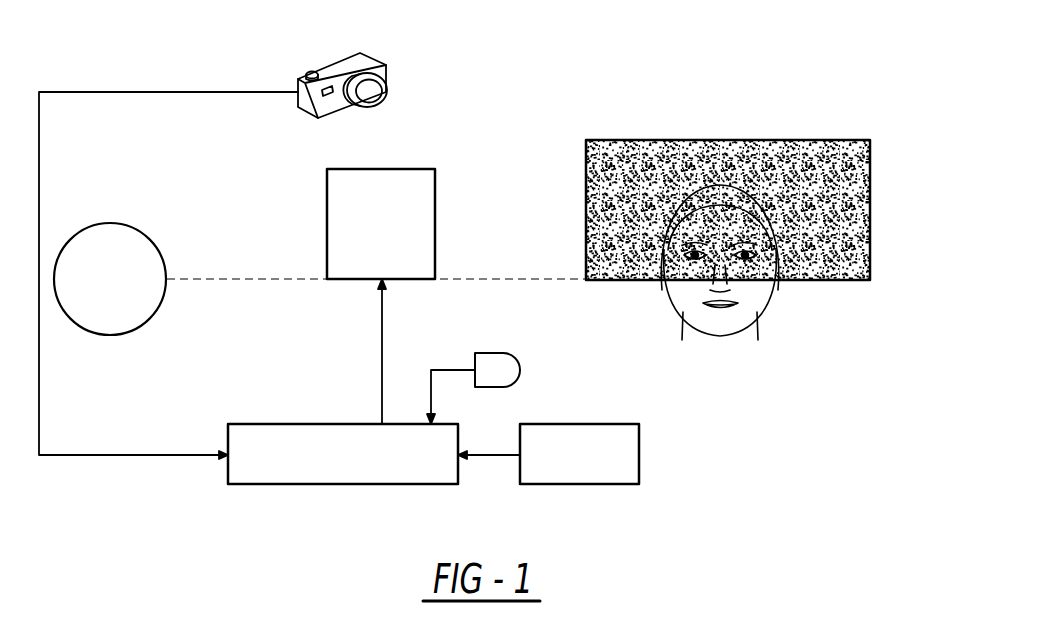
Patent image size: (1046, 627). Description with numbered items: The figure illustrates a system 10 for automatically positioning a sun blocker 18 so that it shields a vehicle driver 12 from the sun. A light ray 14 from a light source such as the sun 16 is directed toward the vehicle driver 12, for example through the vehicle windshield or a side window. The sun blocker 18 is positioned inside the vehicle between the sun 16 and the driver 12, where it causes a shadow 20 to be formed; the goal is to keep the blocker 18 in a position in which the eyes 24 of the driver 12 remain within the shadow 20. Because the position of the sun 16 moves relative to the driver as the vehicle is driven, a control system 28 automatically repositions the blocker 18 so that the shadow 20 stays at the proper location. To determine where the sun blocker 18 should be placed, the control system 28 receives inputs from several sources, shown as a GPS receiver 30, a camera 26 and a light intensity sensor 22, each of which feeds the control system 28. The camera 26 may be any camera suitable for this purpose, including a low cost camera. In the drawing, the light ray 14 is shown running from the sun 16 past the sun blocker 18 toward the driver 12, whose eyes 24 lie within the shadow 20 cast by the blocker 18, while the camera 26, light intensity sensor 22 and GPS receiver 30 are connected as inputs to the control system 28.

The system 10 is at (789, 68).
The vehicle driver 12 is at (725, 270).
The light ray 14 is at (220, 281).
The sun 16 is at (130, 224).
The sun blocker 18 is at (435, 212).
The shadow 20 is at (586, 166).
The light intensity sensor 22 is at (511, 355).
The eyes 24 is at (695, 258).
The camera 26 is at (347, 52).
The control system 28 is at (372, 484).
The GPS receiver 30 is at (639, 447).